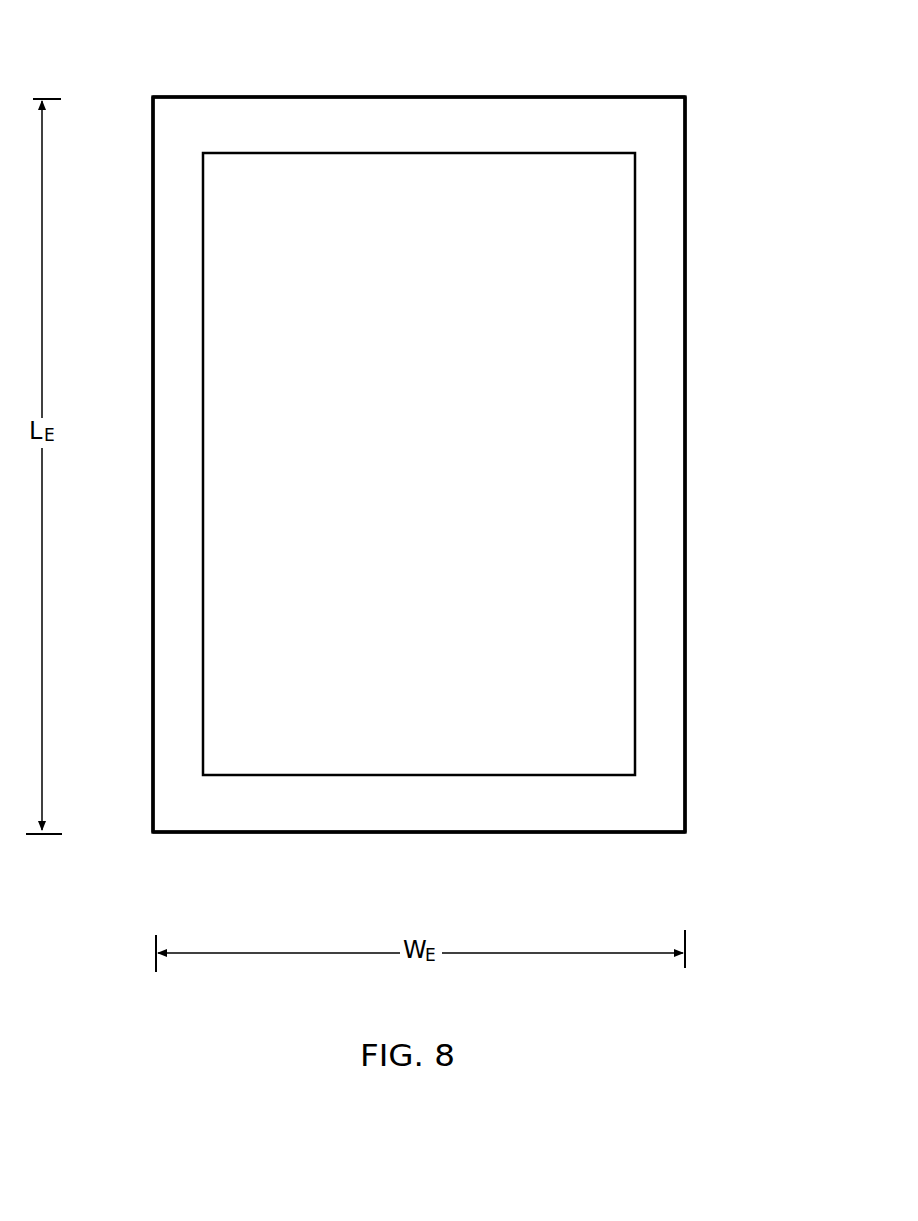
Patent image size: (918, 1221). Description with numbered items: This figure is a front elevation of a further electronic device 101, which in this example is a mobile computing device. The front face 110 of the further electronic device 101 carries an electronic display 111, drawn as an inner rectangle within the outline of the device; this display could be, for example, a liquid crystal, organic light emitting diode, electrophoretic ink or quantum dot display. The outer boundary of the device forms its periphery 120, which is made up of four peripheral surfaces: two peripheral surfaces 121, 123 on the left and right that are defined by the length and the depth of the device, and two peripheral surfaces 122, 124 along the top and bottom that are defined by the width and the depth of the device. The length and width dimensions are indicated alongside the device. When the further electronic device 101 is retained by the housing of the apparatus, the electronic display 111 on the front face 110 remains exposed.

The further electronic device 101 is at (402, 524).
The front face 110 is at (662, 131).
The electronic display 111 is at (594, 233).
The periphery 120 is at (262, 91).
The peripheral surface 121 is at (152, 632).
The peripheral surface 122 is at (518, 96).
The peripheral surface 123 is at (686, 517).
The peripheral surface 124 is at (445, 835).